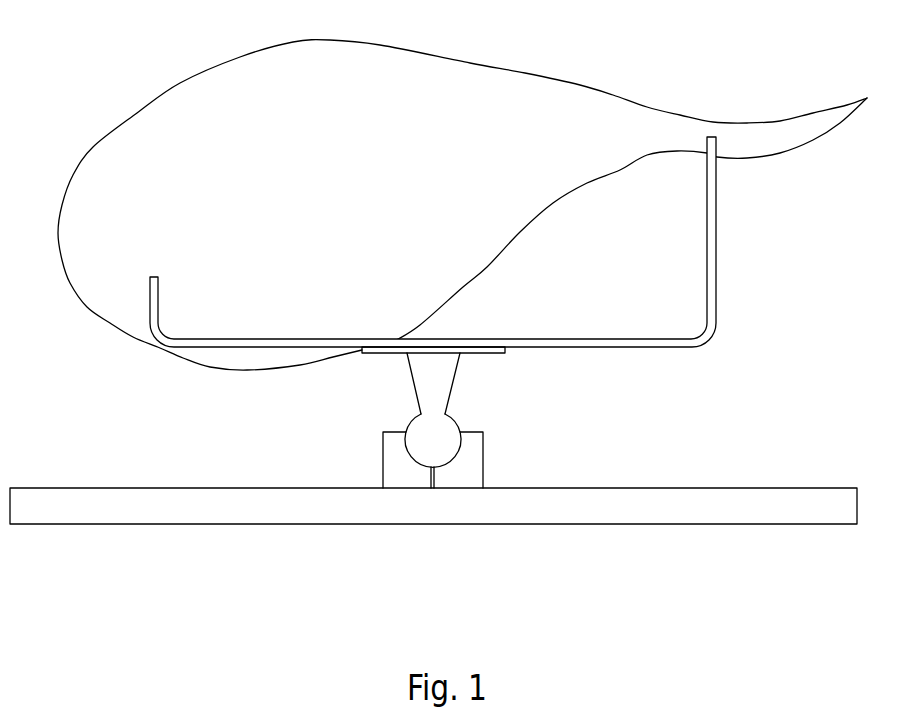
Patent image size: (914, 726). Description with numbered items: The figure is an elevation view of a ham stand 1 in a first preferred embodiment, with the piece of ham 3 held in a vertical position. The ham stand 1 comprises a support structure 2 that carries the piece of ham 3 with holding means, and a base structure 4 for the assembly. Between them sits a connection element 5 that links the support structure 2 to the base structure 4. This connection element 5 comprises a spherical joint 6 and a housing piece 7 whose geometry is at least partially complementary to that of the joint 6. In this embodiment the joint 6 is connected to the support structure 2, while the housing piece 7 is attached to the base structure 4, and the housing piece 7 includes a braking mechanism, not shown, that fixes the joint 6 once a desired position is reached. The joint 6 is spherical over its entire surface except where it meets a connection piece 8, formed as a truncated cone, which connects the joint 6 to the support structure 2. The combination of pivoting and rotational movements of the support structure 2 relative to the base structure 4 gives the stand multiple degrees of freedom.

The ham stand 1 is at (195, 573).
The support structure 2 is at (658, 343).
The piece of ham 3 is at (200, 205).
The base structure 4 is at (615, 502).
The connection element 5 is at (513, 418).
The spherical joint 6 is at (427, 442).
The housing piece 7 is at (463, 472).
The connection piece 8 is at (428, 380).